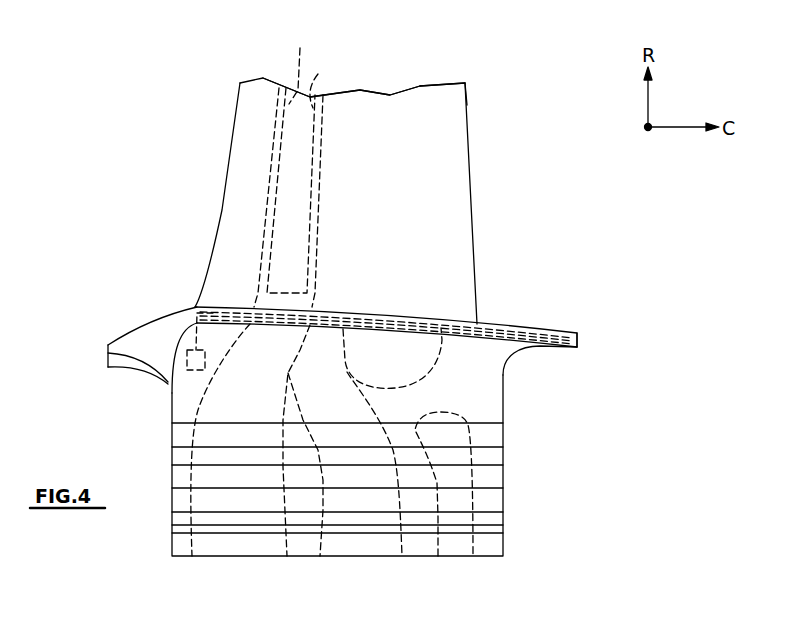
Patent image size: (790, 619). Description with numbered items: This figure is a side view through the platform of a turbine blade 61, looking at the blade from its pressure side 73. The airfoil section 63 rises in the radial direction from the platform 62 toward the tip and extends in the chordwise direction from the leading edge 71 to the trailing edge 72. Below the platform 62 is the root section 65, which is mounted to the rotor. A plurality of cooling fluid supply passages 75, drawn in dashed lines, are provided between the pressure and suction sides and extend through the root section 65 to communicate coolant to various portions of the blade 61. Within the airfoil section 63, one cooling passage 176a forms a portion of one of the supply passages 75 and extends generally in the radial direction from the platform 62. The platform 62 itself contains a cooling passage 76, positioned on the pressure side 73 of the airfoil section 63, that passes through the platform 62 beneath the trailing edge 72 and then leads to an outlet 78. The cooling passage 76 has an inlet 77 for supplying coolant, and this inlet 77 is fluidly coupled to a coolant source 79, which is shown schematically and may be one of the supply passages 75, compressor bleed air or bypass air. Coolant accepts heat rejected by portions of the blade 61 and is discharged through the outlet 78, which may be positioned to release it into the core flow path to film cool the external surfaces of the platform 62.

The blade 61 is at (553, 80).
The platform 62 is at (108, 355).
The airfoil section 63 is at (248, 127).
The root section 65 is at (505, 502).
The leading edge 71 is at (228, 173).
The trailing edge 72 is at (466, 105).
The pressure side 73 is at (460, 193).
The cooling fluid supply passages 75 is at (318, 75).
The cooling passage 76 is at (441, 318).
The inlet 77 is at (214, 316).
The outlet 78 is at (570, 330).
The coolant source 79 is at (168, 394).
The cooling passage 176a is at (300, 48).